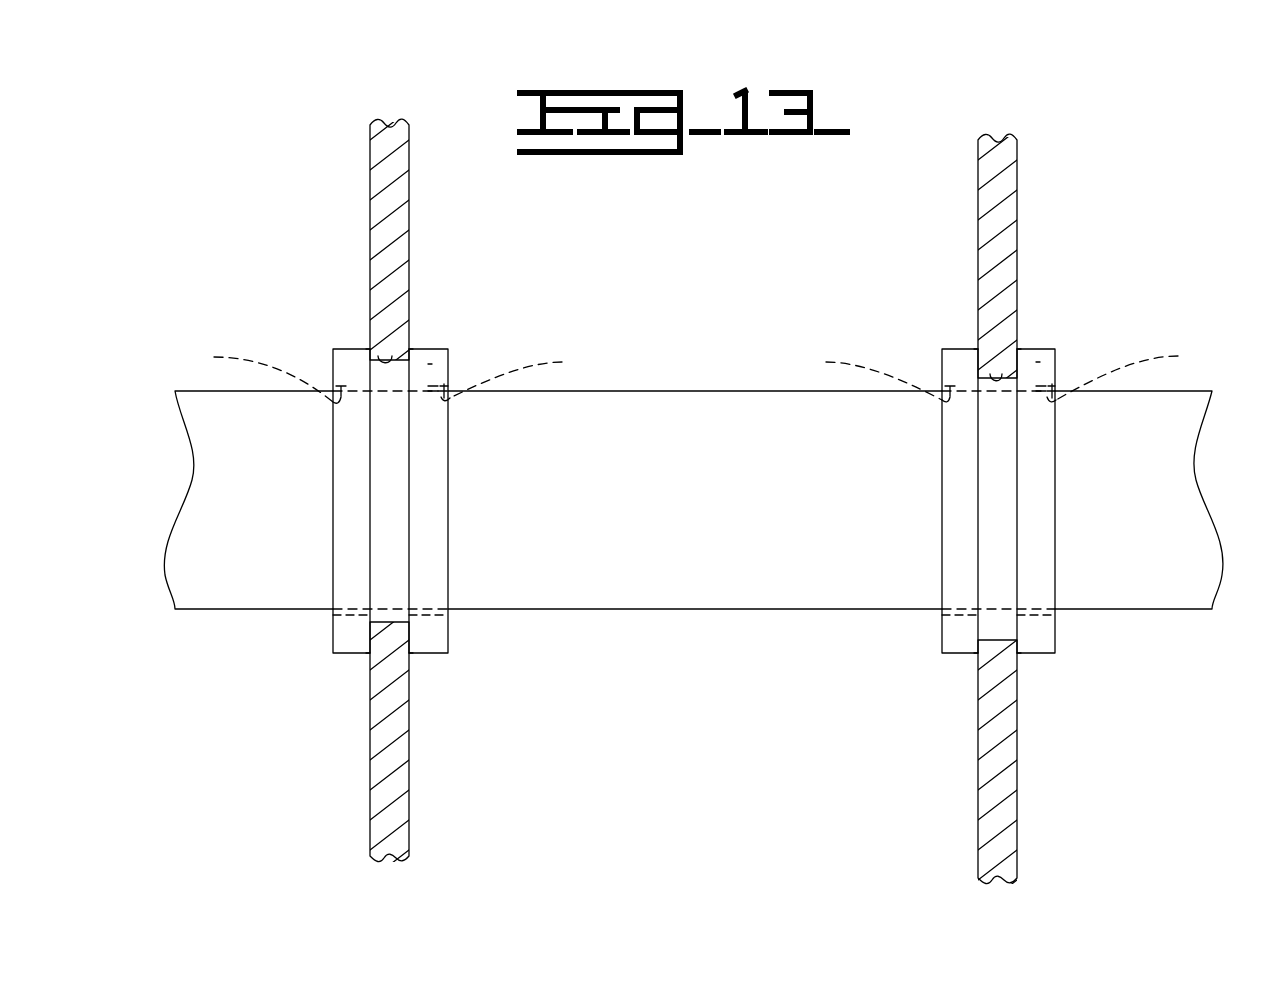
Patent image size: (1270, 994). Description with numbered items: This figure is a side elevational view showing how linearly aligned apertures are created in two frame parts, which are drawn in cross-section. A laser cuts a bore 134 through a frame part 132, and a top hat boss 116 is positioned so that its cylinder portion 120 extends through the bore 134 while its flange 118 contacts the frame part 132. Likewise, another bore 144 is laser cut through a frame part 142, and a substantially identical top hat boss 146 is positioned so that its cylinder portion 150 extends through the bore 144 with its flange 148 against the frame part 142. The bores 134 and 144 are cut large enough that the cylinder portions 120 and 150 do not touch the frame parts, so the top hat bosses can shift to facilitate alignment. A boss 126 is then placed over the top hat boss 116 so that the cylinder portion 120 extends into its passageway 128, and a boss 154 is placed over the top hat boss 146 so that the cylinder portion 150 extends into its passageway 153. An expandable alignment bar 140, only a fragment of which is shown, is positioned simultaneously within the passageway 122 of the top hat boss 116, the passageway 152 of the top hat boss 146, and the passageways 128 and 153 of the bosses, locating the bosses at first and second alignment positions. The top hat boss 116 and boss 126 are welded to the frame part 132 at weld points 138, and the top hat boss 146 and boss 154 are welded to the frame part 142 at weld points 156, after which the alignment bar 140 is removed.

The top hat boss 116 is at (326, 580).
The flange 118 is at (337, 350).
The cylinder portion 120 is at (385, 587).
The passageway 122 is at (250, 373).
The boss 126 is at (432, 364).
The passageway 128 is at (528, 375).
The frame part 132 is at (387, 118).
The bore 134 is at (392, 358).
The weld points 138 is at (364, 347).
The expandable alignment bar 140 is at (700, 391).
The frame part 142 is at (1000, 137).
The bore 144 is at (975, 347).
The top hat boss 146 is at (934, 580).
The flange 148 is at (953, 366).
The cylinder portion 150 is at (1003, 587).
The passageway 152 is at (861, 374).
The passageway 153 is at (1139, 372).
The boss 154 is at (1040, 362).
The weld points 156 is at (966, 348).